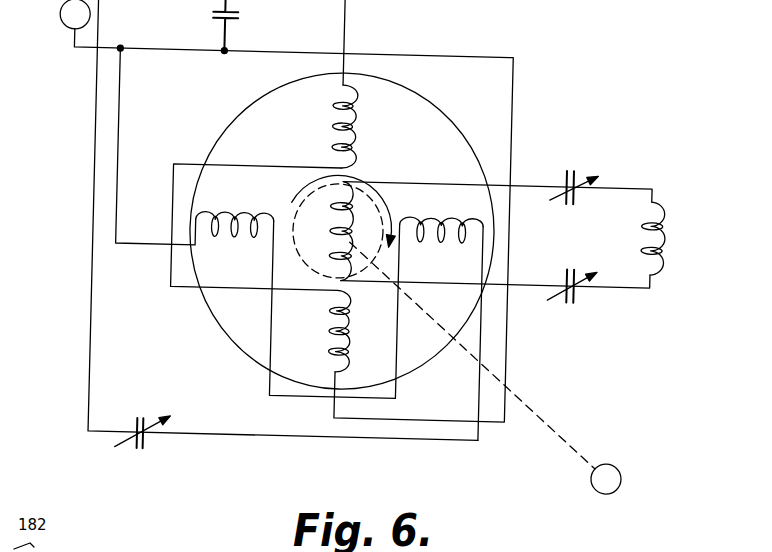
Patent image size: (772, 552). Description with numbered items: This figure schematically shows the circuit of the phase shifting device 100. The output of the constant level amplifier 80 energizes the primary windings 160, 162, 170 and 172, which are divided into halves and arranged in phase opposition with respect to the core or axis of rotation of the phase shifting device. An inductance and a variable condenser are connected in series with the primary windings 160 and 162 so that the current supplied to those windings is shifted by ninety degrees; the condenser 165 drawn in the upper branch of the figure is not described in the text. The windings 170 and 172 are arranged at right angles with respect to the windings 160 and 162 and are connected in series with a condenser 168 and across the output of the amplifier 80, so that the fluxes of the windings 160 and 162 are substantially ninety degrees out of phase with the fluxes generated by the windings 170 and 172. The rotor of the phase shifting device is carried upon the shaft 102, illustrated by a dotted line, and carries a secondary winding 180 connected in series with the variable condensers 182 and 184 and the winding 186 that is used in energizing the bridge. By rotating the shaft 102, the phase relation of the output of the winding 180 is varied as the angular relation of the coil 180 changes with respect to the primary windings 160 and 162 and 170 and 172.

The constant level amplifier 80 is at (55, 21).
The phase shifting device 100 is at (436, 116).
The shaft 102 is at (532, 400).
The primary winding 160 is at (330, 127).
The primary winding 162 is at (330, 333).
The capacitor 165 is at (213, 22).
The condenser 168 is at (142, 423).
The primary winding 170 is at (440, 217).
The primary winding 172 is at (222, 218).
The secondary winding 180 is at (337, 211).
The variable condenser 182 is at (568, 170).
The variable condenser 184 is at (573, 296).
The winding 186 is at (645, 233).